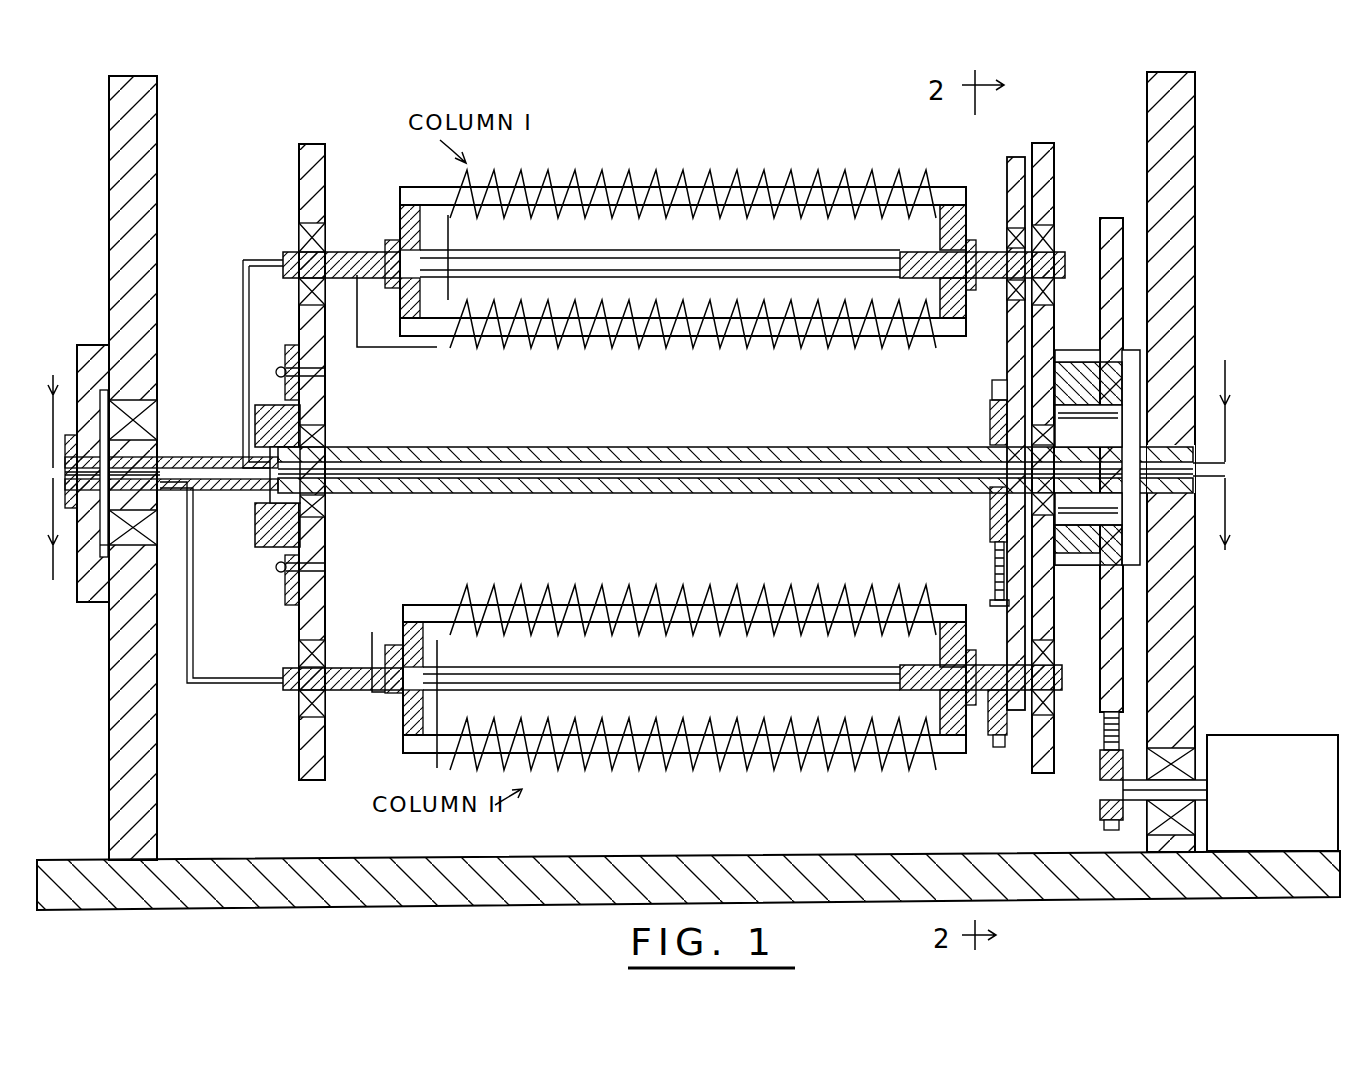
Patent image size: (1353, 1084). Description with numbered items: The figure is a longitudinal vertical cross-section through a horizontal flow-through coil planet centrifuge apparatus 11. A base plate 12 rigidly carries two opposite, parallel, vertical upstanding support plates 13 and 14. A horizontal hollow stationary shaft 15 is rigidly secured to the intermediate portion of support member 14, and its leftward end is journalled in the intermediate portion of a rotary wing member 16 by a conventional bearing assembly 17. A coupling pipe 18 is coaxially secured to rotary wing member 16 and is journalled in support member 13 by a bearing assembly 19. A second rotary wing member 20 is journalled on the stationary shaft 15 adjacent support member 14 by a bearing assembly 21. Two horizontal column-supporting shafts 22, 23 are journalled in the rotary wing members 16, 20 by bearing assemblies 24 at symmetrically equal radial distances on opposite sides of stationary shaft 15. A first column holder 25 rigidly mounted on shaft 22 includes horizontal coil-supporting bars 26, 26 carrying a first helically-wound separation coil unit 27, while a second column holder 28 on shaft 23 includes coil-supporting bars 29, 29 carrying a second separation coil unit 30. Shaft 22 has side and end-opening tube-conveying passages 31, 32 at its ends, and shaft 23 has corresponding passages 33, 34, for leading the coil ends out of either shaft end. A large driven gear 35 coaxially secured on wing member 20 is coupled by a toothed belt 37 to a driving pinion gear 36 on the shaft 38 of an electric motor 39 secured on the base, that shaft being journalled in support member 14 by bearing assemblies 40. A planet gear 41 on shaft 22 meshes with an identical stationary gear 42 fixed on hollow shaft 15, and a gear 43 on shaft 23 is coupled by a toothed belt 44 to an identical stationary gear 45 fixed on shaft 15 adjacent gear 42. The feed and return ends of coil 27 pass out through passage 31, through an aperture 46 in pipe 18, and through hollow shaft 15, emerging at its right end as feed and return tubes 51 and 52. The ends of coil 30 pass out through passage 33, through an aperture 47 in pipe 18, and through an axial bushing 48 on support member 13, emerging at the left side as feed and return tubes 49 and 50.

The flow-through coil planet centrifuge apparatus 11 is at (1256, 114).
The base plate 12 is at (600, 860).
The support plate 13 is at (155, 262).
The support plate 14 is at (1183, 236).
The hollow stationary shaft 15 is at (630, 447).
The rotary wing member 16 is at (326, 600).
The bearing assembly 17 is at (325, 437).
The coupling pipe 18 is at (178, 455).
The bearing assembly 19 is at (150, 395).
The second rotary wing member 20 is at (1054, 172).
The bearing assembly 21 is at (1056, 430).
The column-supporting shaft 22 is at (658, 256).
The column-supporting shaft 23 is at (662, 672).
The bearing assemblies 24 is at (320, 240).
The first column holder 25 is at (952, 355).
The coil-supporting bars 26 is at (780, 180).
The first helically-wound separation coil unit 27 is at (610, 180).
The second column holder 28 is at (965, 597).
The coil-supporting bars 29 is at (625, 600).
The second helically-wound separation coil unit 30 is at (755, 600).
The tube-conveying passage 31 is at (330, 252).
The tube-conveying passage 32 is at (992, 250).
The passage 33 is at (332, 665).
The passage 34 is at (978, 720).
The large driven gear 35 is at (1100, 285).
The driving pinion gear 36 is at (1100, 815).
The toothed belt 37 is at (1104, 730).
The motor shaft 38 is at (1205, 788).
The electric motor 39 is at (1280, 735).
The bearing assemblies 40 is at (1192, 745).
The planet gear 41 is at (1007, 345).
The stationary gear 42 is at (1007, 383).
The gear 43 is at (1000, 750).
The toothed belt 44 is at (992, 572).
The stationary gear 45 is at (990, 432).
The aperture 46 is at (240, 447).
The aperture 47 is at (185, 496).
The axial bushing 48 is at (155, 495).
The feed tube 49 is at (53, 375).
The return tube 50 is at (53, 580).
The feed tube 51 is at (1225, 360).
The return tube 52 is at (1225, 478).